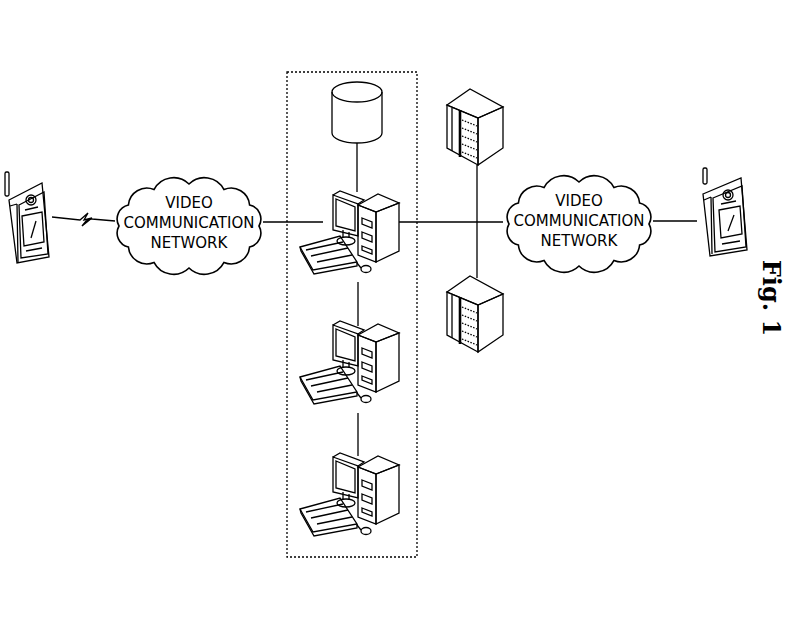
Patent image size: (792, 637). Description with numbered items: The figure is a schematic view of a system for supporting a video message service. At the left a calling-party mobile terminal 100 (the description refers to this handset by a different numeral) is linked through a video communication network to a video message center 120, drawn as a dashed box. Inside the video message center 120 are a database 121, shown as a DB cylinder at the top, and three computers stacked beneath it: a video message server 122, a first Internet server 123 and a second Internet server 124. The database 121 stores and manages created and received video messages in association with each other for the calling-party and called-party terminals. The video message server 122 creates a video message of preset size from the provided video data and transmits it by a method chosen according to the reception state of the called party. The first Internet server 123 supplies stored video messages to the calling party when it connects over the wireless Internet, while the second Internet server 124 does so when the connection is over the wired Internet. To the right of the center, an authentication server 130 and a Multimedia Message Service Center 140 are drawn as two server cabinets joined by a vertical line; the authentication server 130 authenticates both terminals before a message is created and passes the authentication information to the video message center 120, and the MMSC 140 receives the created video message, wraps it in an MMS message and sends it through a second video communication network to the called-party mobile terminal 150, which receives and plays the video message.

The first mobile terminal 100 is at (29, 176).
The video message center 120 is at (315, 72).
The database 121 is at (378, 86).
The video message server 122 is at (398, 212).
The first Internet server 123 is at (398, 360).
The second Internet server 124 is at (400, 493).
The authentication server 130 is at (503, 113).
The Multimedia Message Service Center (MMSC) 140 is at (503, 318).
The called-party mobile terminal 150 is at (720, 178).